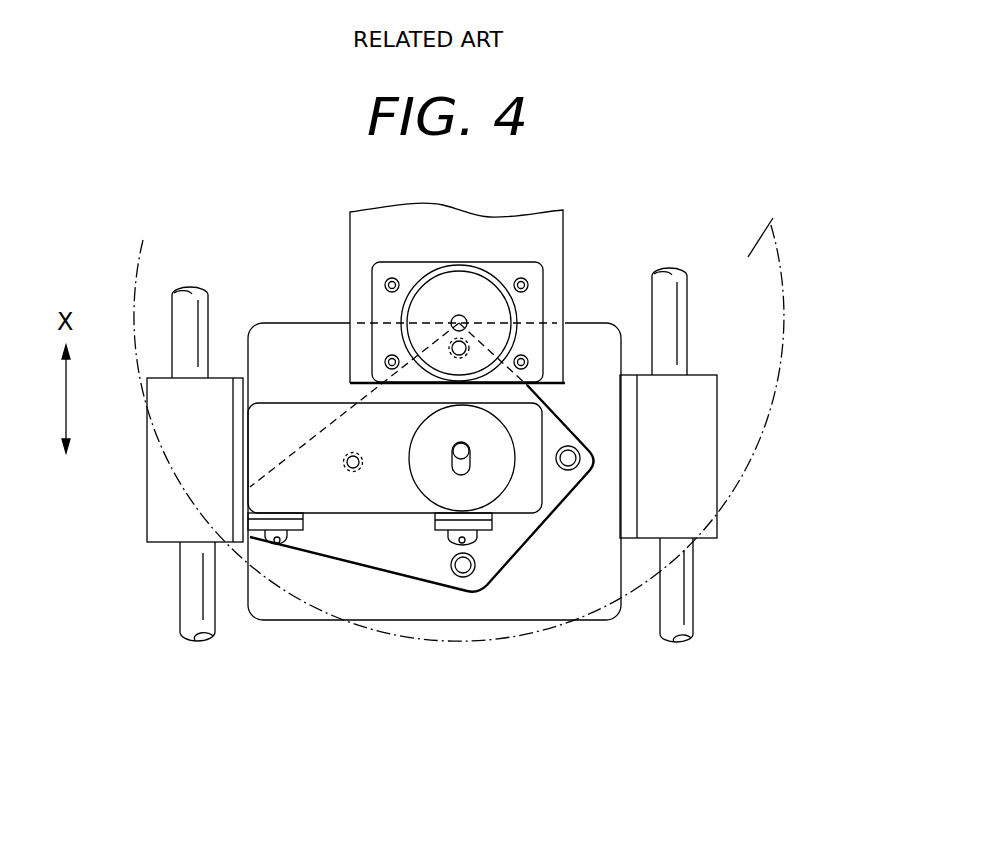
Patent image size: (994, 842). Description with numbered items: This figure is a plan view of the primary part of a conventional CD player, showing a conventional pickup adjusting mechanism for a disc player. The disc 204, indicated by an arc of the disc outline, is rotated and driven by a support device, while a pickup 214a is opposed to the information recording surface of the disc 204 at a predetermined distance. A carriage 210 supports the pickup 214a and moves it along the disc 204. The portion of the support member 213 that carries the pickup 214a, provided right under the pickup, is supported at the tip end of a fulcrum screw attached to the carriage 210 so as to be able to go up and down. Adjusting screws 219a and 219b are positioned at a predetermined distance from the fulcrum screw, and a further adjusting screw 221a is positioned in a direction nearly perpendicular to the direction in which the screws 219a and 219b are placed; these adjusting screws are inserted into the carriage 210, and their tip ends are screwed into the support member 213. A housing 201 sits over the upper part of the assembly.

The motor housing 201 is at (481, 300).
The disc 204 is at (772, 228).
The carriage 210 is at (273, 612).
The support member 213 is at (370, 550).
The pickup 214a is at (455, 452).
The adjusting screw 219a is at (470, 573).
The adjusting screw 219b is at (467, 347).
The adjusting screw 221a is at (353, 472).